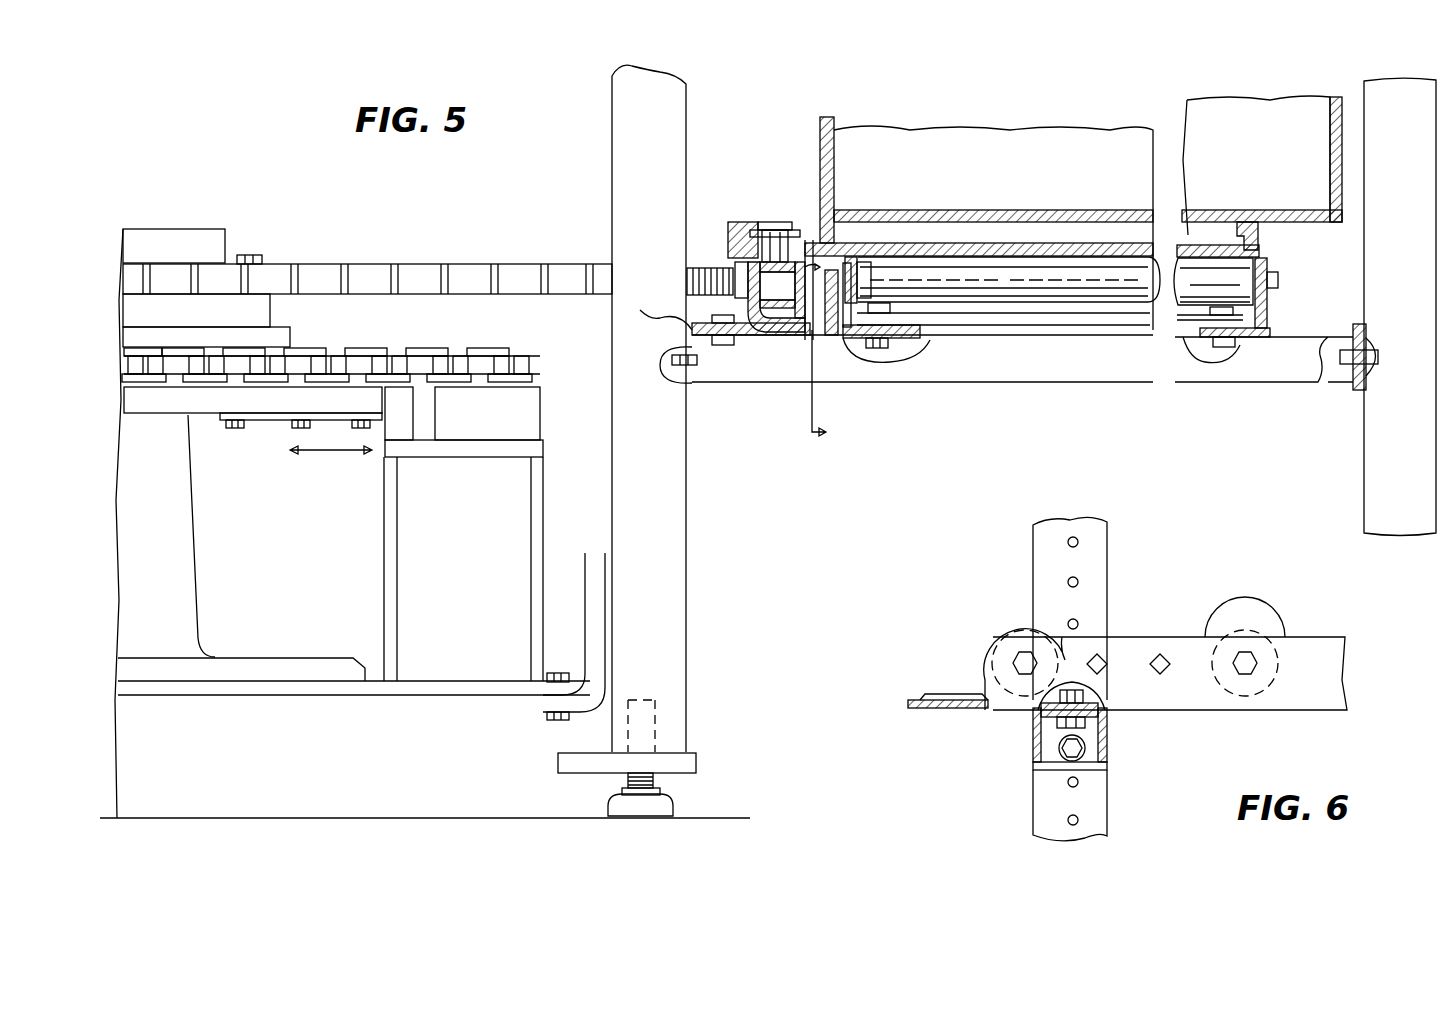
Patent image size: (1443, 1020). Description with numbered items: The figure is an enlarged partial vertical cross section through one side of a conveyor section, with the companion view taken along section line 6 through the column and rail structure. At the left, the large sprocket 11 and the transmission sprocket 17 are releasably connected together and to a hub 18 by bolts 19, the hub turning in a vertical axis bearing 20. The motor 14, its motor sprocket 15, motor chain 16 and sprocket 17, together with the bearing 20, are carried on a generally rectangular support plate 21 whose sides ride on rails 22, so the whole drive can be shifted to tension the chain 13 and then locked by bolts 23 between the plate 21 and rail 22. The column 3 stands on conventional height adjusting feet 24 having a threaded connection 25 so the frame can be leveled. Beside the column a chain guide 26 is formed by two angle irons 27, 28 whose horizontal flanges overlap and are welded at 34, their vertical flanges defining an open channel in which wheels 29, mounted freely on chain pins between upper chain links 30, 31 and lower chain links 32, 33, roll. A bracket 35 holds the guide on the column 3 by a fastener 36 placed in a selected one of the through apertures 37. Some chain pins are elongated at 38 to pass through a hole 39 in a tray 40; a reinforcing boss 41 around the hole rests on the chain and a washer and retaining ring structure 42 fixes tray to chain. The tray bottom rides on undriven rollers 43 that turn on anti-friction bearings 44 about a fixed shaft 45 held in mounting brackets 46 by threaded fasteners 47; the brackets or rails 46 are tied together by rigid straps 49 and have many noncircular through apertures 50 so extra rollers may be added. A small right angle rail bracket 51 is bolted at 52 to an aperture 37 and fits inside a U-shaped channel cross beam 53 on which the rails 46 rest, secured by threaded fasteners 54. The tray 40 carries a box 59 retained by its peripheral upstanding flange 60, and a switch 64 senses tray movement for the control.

In FIG. 5, the column 3 is at (618, 84).
In FIG. 6, the column 3 is at (1107, 622).
In FIG. 5, the section line 6— 6 is at (816, 359).
In FIG. 5, the sprocket 11 is at (460, 294).
In FIG. 5, the chain 13 is at (808, 330).
In FIG. 5, the motor 14 is at (497, 422).
In FIG. 5, the motor sprocket 15 is at (505, 348).
In FIG. 5, the motor chain 16 is at (375, 352).
In FIG. 5, the transmission sprocket 17 is at (305, 362).
In FIG. 5, the hub 18 is at (262, 310).
In FIG. 5, the bolts 19 is at (255, 255).
In FIG. 5, the vertical axis bearing 20 is at (178, 528).
In FIG. 5, the support plate 21 is at (300, 690).
In FIG. 5, the rails 22 is at (540, 702).
In FIG. 5, the bolts 23 is at (552, 718).
In FIG. 5, the height adjusting feet 24 is at (668, 803).
In FIG. 5, the threaded connection 25 is at (660, 783).
In FIG. 5, the chain guide 26 is at (678, 300).
In FIG. 5, the angle iron 27 is at (814, 319).
In FIG. 5, the angle iron 28 is at (660, 311).
In FIG. 5, the wheels 29 is at (778, 300).
In FIG. 5, the upper chain link 30 is at (855, 245).
In FIG. 5, the upper chain link 31 is at (742, 262).
In FIG. 5, the lower chain link 32 is at (760, 315).
In FIG. 5, the lower chain link 33 is at (790, 310).
In FIG. 5, the weld 34 is at (718, 320).
In FIG. 5, the bracket 35 is at (700, 380).
In FIG. 5, the fastener 36 is at (670, 362).
In FIG. 6, the through apertures 37 is at (1078, 542).
In FIG. 5, the elongated pin 38 is at (792, 233).
In FIG. 5, the hole 39 is at (835, 230).
In FIG. 5, the tray 40 is at (1140, 245).
In FIG. 5, the reinforcing boss 41 is at (768, 232).
In FIG. 5, the washer and retaining ring structure 42 is at (776, 226).
In FIG. 5, the rollers 43 is at (1085, 260).
In FIG. 6, the rollers 43 is at (1018, 630).
In FIG. 5, the anti-friction bearings 44 is at (875, 270).
In FIG. 5, the fixed shaft 45 is at (872, 292).
In FIG. 5, the mounting brackets 46 is at (900, 358).
In FIG. 6, the mounting brackets 46 is at (1318, 705).
In FIG. 5, the threaded fasteners 47 is at (832, 316).
In FIG. 6, the threaded fasteners 47 is at (1027, 663).
In FIG. 5, the rigid straps 49 is at (1100, 326).
In FIG. 6, the rigid straps 49 is at (940, 700).
In FIG. 5, the through apertures 50 is at (870, 250).
In FIG. 6, the through apertures 50 is at (1105, 664).
In FIG. 5, the rail bracket 51 is at (1355, 388).
In FIG. 6, the rail bracket 51 is at (1100, 770).
In FIG. 6, the bolt 52 is at (1085, 748).
In FIG. 6, the cross beam 53 is at (1033, 735).
In FIG. 5, the threaded fasteners 54 is at (895, 342).
In FIG. 6, the threaded fasteners 54 is at (1098, 700).
In FIG. 5, the box 59 is at (828, 118).
In FIG. 5, the peripheral upstanding flange 60 is at (738, 240).
In FIG. 5, the switch 64 is at (716, 270).